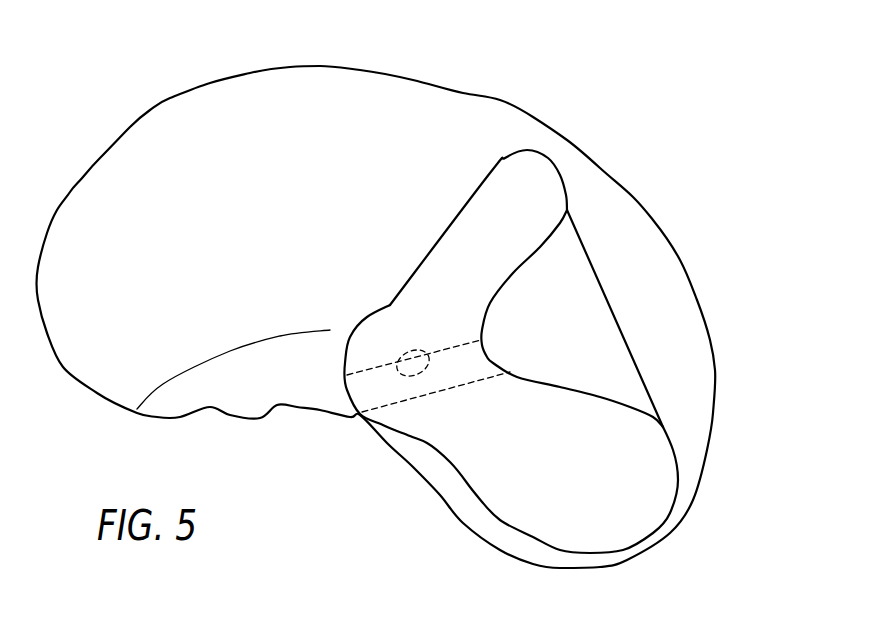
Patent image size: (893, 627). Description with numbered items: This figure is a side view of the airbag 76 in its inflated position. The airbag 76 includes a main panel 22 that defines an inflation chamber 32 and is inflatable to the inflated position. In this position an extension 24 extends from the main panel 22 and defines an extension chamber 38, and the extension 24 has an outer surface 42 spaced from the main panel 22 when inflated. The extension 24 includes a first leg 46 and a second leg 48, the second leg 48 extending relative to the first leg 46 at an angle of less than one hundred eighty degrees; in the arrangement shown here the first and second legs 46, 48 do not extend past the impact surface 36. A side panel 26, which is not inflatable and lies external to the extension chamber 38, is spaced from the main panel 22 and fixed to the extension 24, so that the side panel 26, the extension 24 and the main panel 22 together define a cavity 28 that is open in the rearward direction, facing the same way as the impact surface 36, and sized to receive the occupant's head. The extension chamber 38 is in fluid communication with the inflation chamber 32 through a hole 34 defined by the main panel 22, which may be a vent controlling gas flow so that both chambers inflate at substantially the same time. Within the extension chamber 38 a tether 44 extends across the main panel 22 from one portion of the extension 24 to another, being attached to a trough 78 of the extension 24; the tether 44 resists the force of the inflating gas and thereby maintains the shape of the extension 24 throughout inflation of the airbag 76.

The main panel 22 is at (317, 83).
The extension 24 is at (563, 510).
The side panel 26 is at (640, 362).
The cavity 28 is at (565, 285).
The inflation chamber 32 is at (283, 130).
The hole 34 is at (413, 350).
The impact surface 36 is at (697, 287).
The extension chamber 38 is at (498, 453).
The outer surface 42 is at (617, 457).
The tether 44 is at (423, 397).
The first leg 46 is at (613, 507).
The second leg 48 is at (508, 208).
The airbag 76 is at (169, 93).
The trough 78 is at (490, 355).